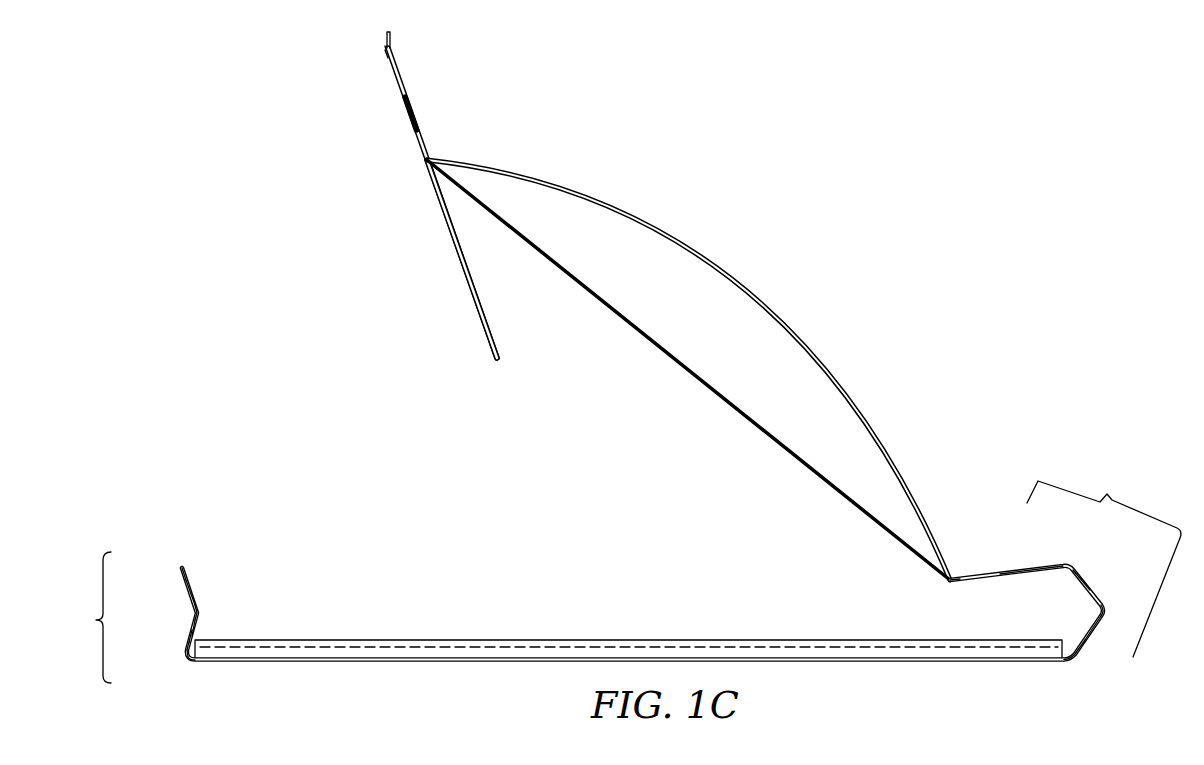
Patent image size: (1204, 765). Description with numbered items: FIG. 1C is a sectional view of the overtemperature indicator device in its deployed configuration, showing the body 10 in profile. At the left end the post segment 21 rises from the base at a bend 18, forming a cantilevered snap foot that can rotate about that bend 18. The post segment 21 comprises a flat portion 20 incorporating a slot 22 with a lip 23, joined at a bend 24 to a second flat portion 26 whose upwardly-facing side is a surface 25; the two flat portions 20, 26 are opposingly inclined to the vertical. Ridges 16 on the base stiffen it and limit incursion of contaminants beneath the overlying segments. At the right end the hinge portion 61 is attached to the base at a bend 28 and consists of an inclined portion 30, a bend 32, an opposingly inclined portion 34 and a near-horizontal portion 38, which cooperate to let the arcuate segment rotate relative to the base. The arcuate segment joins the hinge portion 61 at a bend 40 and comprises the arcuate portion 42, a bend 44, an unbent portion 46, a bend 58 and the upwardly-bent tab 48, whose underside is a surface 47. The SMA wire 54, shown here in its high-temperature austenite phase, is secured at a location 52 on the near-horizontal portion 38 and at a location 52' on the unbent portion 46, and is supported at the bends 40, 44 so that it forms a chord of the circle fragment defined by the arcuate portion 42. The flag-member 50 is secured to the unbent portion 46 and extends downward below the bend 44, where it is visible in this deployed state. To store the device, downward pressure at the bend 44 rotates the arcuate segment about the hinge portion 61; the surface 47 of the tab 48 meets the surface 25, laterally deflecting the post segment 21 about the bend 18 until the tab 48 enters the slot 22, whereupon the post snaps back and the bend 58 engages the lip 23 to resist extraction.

The body 10 is at (781, 135).
The ridges 16 is at (190, 664).
The bend 18 is at (187, 655).
The flat portion 20 is at (183, 643).
The post segment 21 is at (102, 620).
The slot 22 is at (190, 630).
The lip 23 is at (197, 636).
The bend 24 is at (193, 613).
The surface 25 is at (195, 587).
The flat portion 26 is at (182, 580).
The bend 28 is at (1080, 660).
The inclined portion 30 is at (1100, 632).
The bend 32 is at (1105, 610).
The opposingly inclined portion 34 is at (1091, 585).
The near-horizontal portion 38 is at (1043, 565).
The bend 40 is at (948, 583).
The arcuate portion 42 is at (782, 308).
The bend 44 is at (432, 158).
The unbent portion 46 is at (400, 70).
The surface 47 is at (385, 47).
The tab 48 is at (392, 38).
The flag-member 50 is at (474, 305).
The securing location 52 is at (628, 638).
The securing location 52' is at (366, 128).
The SMA wire 54 is at (694, 378).
The bend 58 is at (383, 52).
The hinge portion 61 is at (1105, 496).